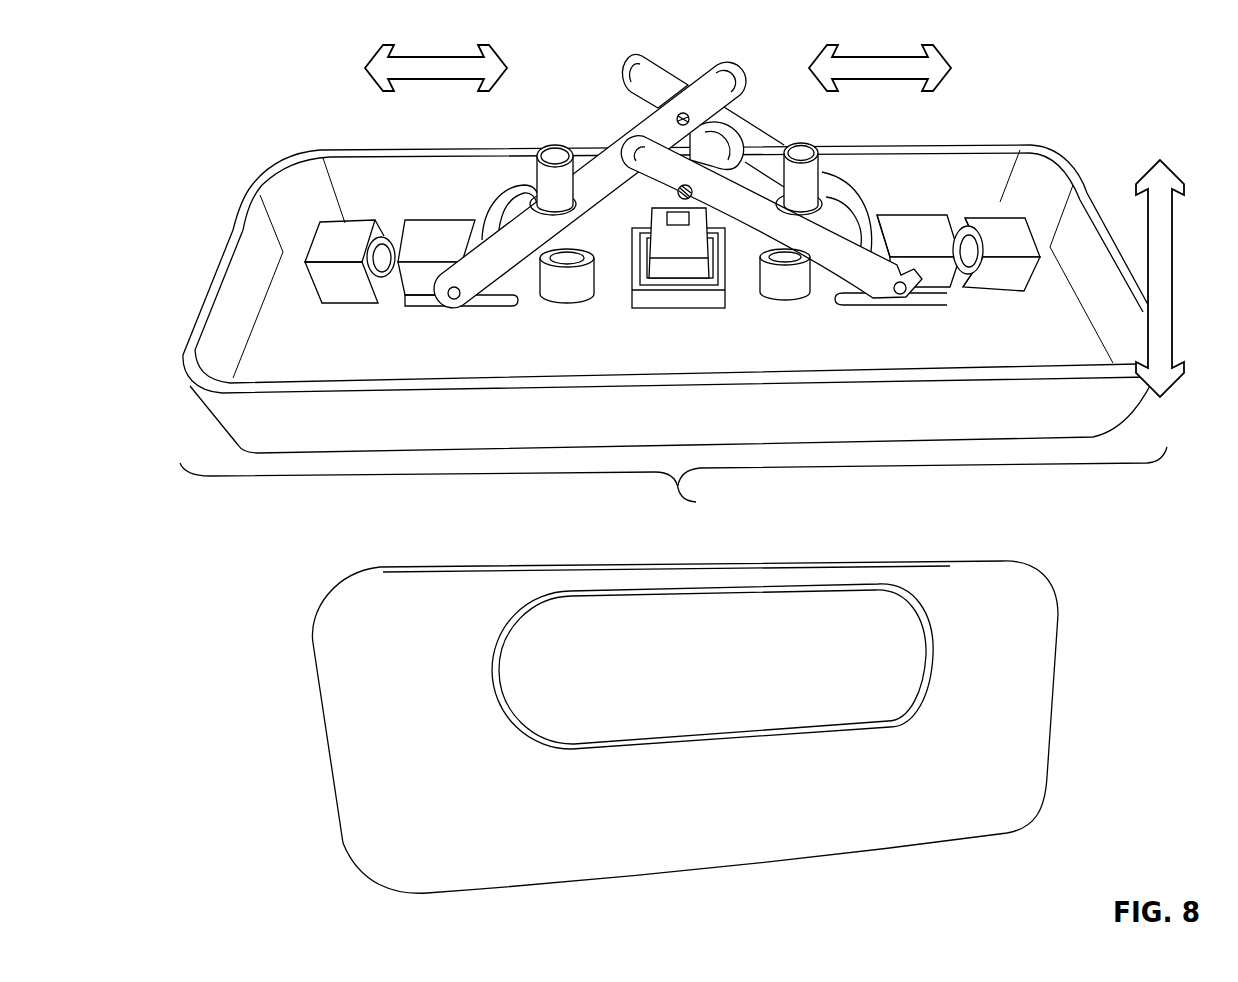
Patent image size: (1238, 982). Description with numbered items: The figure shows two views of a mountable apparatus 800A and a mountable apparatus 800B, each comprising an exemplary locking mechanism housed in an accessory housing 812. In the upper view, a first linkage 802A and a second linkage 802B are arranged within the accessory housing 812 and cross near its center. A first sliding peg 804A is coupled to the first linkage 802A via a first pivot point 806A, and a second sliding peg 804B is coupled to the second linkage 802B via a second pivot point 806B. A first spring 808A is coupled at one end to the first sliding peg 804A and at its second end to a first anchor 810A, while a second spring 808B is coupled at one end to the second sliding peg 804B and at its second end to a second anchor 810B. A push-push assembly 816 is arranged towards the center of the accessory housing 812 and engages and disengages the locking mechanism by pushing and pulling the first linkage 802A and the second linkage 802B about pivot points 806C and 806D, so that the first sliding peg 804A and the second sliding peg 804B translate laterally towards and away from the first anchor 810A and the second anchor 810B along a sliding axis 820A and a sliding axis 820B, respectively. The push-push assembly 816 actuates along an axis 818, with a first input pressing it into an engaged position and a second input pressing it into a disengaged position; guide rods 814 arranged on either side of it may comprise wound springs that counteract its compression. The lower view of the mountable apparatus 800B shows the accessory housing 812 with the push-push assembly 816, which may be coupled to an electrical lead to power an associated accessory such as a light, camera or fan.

The mountable apparatus 800A is at (212, 80).
The mountable apparatus 800B is at (261, 567).
The first linkage 802A is at (499, 188).
The second linkage 802B is at (846, 178).
The first sliding peg 804A is at (426, 247).
The second sliding peg 804B is at (919, 245).
The first pivot point 806A is at (462, 300).
The second pivot point 806B is at (899, 299).
The pivot point 806C is at (672, 188).
The pivot point 806D is at (683, 110).
The first spring 808A is at (383, 234).
The second spring 808B is at (960, 226).
The first anchor 810A is at (326, 246).
The second anchor 810B is at (1014, 243).
The accessory housing 812 is at (316, 824).
The guide rods 814 is at (794, 190).
The push-push assembly 816 is at (679, 241).
The axis 818 is at (1168, 158).
The sliding axis 820A is at (441, 70).
The sliding axis 820B is at (880, 70).